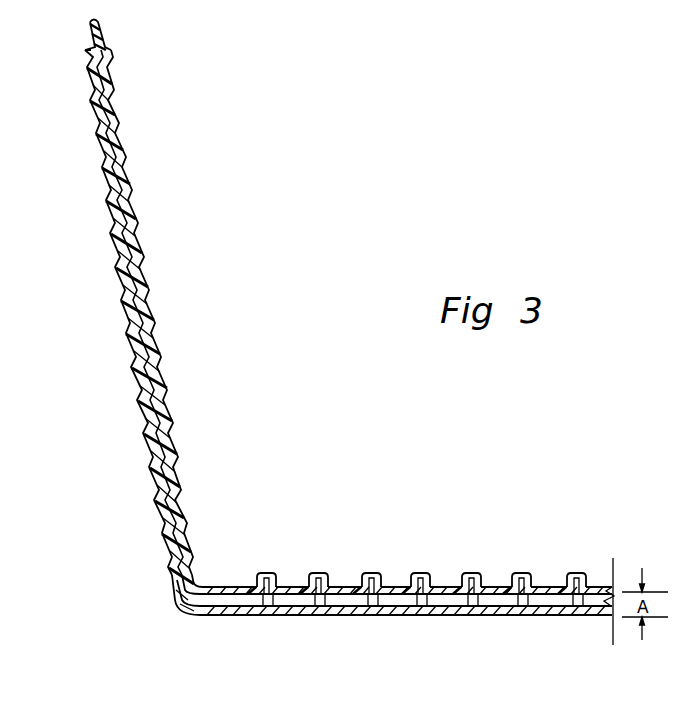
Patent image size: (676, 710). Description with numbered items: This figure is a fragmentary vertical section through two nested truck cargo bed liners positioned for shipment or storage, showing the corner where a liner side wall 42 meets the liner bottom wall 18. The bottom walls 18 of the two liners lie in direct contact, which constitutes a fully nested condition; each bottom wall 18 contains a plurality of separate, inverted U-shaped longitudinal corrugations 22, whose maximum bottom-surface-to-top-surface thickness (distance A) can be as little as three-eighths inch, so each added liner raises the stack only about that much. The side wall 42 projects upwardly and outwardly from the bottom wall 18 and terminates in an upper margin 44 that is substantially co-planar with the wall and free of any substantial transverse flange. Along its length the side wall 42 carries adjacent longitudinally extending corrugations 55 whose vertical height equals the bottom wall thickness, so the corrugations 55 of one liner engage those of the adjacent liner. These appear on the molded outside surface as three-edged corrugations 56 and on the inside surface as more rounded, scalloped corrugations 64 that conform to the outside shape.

The upper margin 44 is at (110, 163).
The longitudinally extending corrugations 55 is at (112, 208).
The liner side wall 42 is at (123, 267).
The scalloped corrugations 64 is at (152, 320).
The three-edged corrugations 56 is at (145, 398).
The liner bottom wall 18 is at (358, 588).
The longitudinal corrugations 22 is at (471, 586).